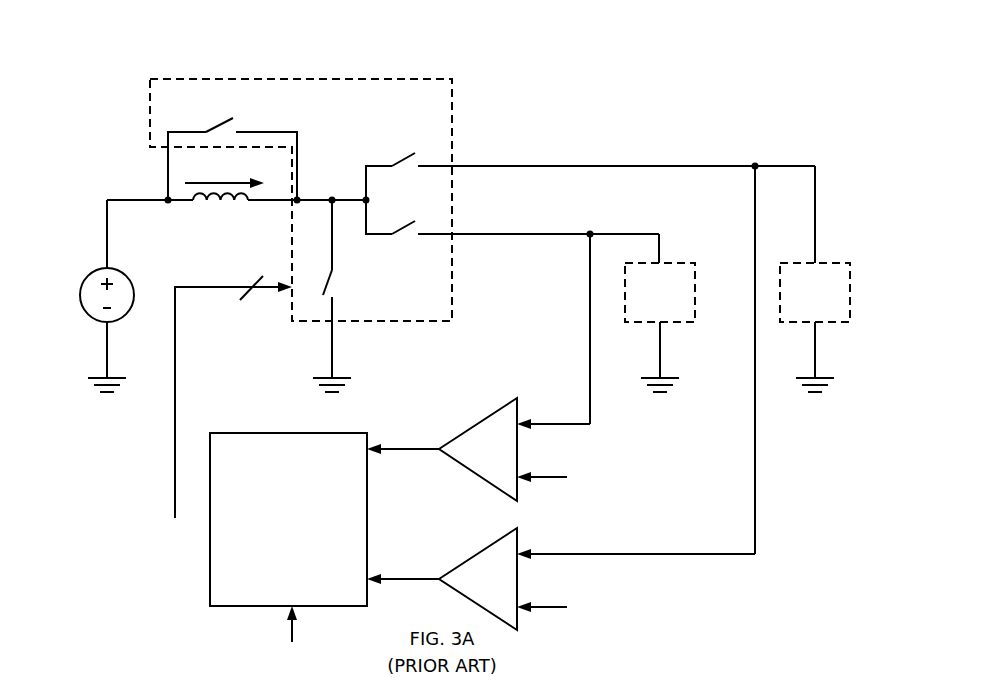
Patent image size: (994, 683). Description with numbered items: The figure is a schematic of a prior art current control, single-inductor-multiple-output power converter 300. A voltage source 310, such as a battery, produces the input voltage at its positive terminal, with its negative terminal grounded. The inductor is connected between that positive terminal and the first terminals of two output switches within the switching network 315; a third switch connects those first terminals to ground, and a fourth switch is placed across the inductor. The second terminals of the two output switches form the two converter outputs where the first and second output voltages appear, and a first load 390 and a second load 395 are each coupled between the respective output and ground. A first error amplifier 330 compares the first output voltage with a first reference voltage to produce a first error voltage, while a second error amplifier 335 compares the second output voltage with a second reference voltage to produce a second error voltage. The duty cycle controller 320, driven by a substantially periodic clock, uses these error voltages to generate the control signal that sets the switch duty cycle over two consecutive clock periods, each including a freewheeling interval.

The power converter 300 is at (560, 82).
The voltage source 310 is at (89, 275).
The switching network 315 is at (300, 78).
The duty cycle controller 320 is at (288, 519).
The first error amplifier 330 is at (496, 410).
The second error amplifier 335 is at (496, 540).
The first load 390 is at (660, 327).
The second load 395 is at (815, 327).